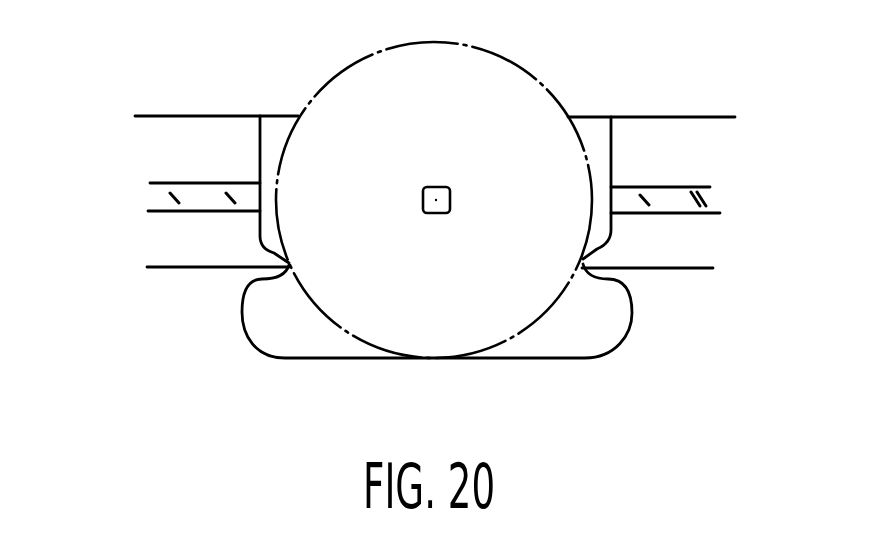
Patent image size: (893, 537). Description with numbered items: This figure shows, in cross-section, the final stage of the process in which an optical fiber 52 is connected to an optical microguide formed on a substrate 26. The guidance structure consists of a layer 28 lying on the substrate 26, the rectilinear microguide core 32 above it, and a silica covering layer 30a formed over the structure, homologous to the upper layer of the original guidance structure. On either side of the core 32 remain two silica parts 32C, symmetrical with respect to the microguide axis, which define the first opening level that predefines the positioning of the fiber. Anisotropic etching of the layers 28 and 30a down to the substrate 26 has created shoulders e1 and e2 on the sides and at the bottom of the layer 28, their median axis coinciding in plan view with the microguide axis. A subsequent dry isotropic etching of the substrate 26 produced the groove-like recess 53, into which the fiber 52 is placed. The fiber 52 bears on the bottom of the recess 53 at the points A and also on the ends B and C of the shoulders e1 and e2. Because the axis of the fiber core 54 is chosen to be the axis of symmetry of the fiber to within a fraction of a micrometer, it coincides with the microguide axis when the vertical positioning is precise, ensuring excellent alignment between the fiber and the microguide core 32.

The optical fiber 52 is at (540, 82).
The silica covering layer 30a is at (225, 137).
The silica parts 32C is at (160, 193).
The layer 28 is at (152, 240).
The recess 53 is at (613, 334).
The microguide core 32 is at (422, 192).
The fiber core 54 is at (441, 193).
The substrate 26 is at (188, 391).
The bearing points on recess bottom A is at (433, 358).
The shoulder end B is at (294, 258).
The shoulder end C is at (578, 257).
The shoulder e1 is at (284, 260).
The shoulder e2 is at (587, 262).